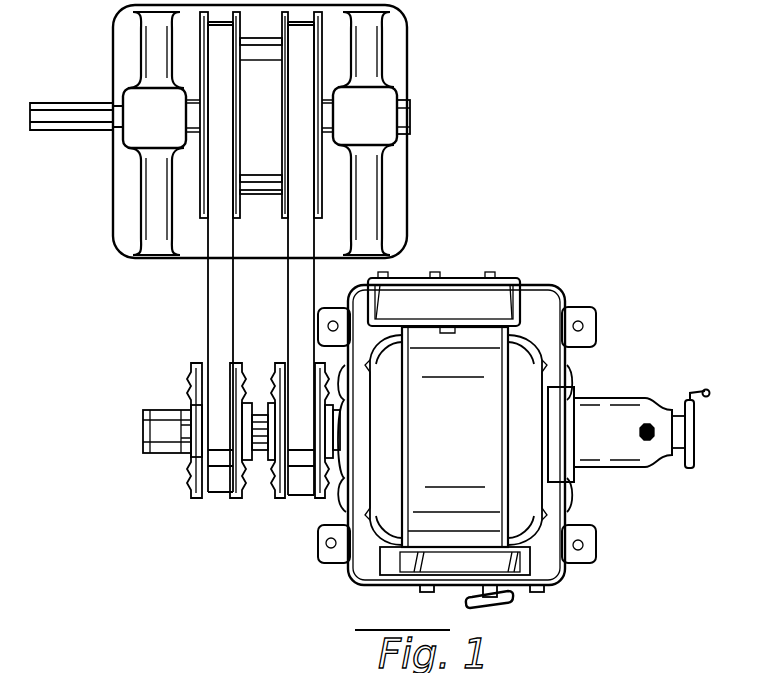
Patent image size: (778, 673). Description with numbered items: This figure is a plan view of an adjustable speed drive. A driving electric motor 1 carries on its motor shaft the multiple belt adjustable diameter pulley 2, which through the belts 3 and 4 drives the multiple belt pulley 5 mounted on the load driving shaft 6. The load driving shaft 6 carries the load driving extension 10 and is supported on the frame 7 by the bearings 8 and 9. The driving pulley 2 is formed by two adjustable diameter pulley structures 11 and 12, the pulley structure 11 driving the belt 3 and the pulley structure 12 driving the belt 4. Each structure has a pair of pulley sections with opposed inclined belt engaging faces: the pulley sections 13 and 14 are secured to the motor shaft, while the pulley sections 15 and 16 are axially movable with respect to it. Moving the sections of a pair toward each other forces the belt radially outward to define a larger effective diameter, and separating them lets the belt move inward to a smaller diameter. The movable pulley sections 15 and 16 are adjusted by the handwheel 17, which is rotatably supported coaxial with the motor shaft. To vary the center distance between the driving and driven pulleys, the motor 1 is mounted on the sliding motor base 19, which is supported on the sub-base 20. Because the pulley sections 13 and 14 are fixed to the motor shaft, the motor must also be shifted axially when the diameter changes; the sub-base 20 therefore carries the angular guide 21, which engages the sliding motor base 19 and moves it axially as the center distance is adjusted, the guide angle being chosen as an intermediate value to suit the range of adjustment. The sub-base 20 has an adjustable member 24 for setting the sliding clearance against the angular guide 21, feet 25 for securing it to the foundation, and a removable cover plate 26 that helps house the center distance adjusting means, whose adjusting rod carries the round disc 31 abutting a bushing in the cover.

The driving electric motor 1 is at (451, 441).
The multiple belt adjustable diameter pulley 2 is at (250, 531).
The belt 3 is at (288, 290).
The belt 4 is at (207, 285).
The multiple belt pulley 5 is at (269, 196).
The load driving shaft 6 is at (410, 115).
The frame 7 is at (113, 222).
The bearing 8 is at (125, 142).
The bearing 9 is at (393, 145).
The load driving extension 10 is at (83, 132).
The adjustable diameter pulley structure 11 is at (282, 362).
The adjustable diameter pulley structure 12 is at (198, 362).
The pulley section 13 is at (318, 498).
The pulley section 14 is at (232, 493).
The pulley section 15 is at (288, 498).
The pulley section 16 is at (202, 497).
The handwheel 17 is at (695, 453).
The sliding motor base 19 is at (397, 540).
The sub-base 20 is at (380, 582).
The angular guide 21 is at (375, 308).
The adjustable member 24 is at (225, 668).
The feet 25 is at (597, 545).
The removable cover plate 26 is at (149, 668).
The round disc 31 is at (497, 597).